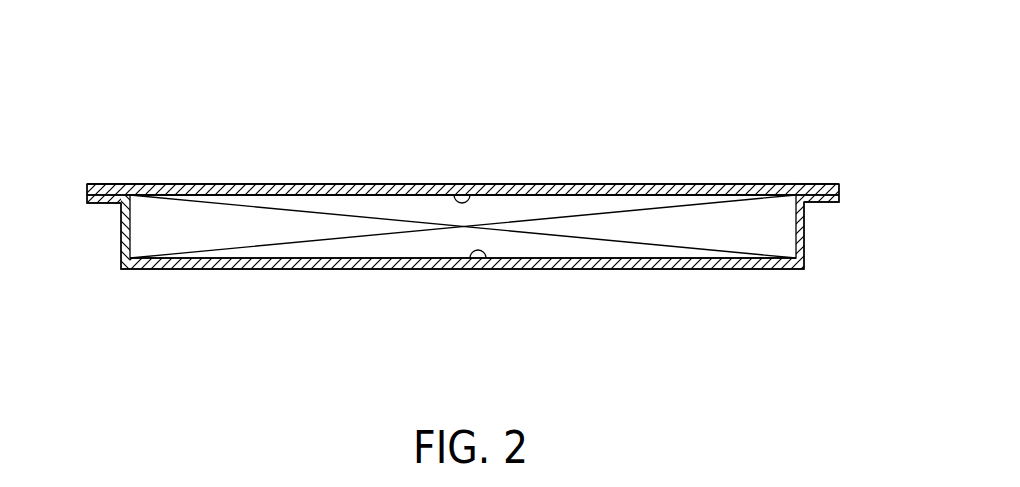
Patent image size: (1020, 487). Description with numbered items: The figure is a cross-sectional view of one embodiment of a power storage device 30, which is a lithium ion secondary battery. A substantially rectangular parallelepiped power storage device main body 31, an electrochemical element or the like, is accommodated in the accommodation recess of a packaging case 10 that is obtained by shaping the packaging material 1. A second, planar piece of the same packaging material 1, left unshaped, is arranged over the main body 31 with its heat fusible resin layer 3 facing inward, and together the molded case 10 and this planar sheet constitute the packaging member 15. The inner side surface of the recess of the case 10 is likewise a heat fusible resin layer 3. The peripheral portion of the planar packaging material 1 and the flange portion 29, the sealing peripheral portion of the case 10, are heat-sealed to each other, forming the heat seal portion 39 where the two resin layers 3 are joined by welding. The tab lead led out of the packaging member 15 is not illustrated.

The power storage device 30 is at (692, 80).
The power storage device main body 31 is at (578, 225).
The packaging member 15 is at (282, 102).
The packaging case 10 is at (316, 262).
The packaging material 1 is at (379, 184).
The heat fusible resin layer 3 is at (471, 184).
The heat seal portion 39 is at (108, 185).
The flange portion 29 is at (100, 199).